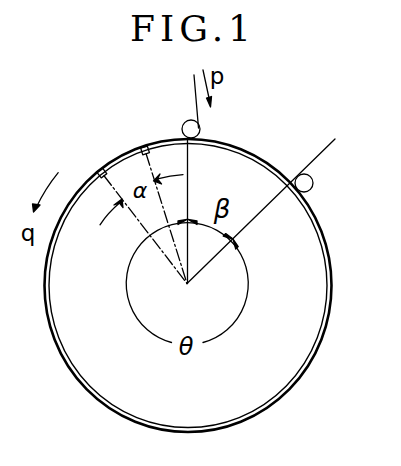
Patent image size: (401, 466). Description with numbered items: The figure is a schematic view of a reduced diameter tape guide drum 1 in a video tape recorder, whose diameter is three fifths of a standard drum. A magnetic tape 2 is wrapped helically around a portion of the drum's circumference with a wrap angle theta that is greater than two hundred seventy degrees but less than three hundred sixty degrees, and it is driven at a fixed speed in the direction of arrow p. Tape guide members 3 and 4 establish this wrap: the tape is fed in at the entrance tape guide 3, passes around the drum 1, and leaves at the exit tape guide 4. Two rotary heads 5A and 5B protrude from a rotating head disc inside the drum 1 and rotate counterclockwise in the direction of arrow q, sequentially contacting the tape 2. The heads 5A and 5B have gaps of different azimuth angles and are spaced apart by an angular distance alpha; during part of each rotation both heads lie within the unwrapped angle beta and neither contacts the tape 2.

The tape guide drum 1 is at (265, 162).
The magnetic tape 2 is at (192, 86).
The tape guide member 3 is at (200, 129).
The tape guide member 4 is at (313, 186).
The rotary head 5A is at (93, 178).
The rotary head 5B is at (131, 149).